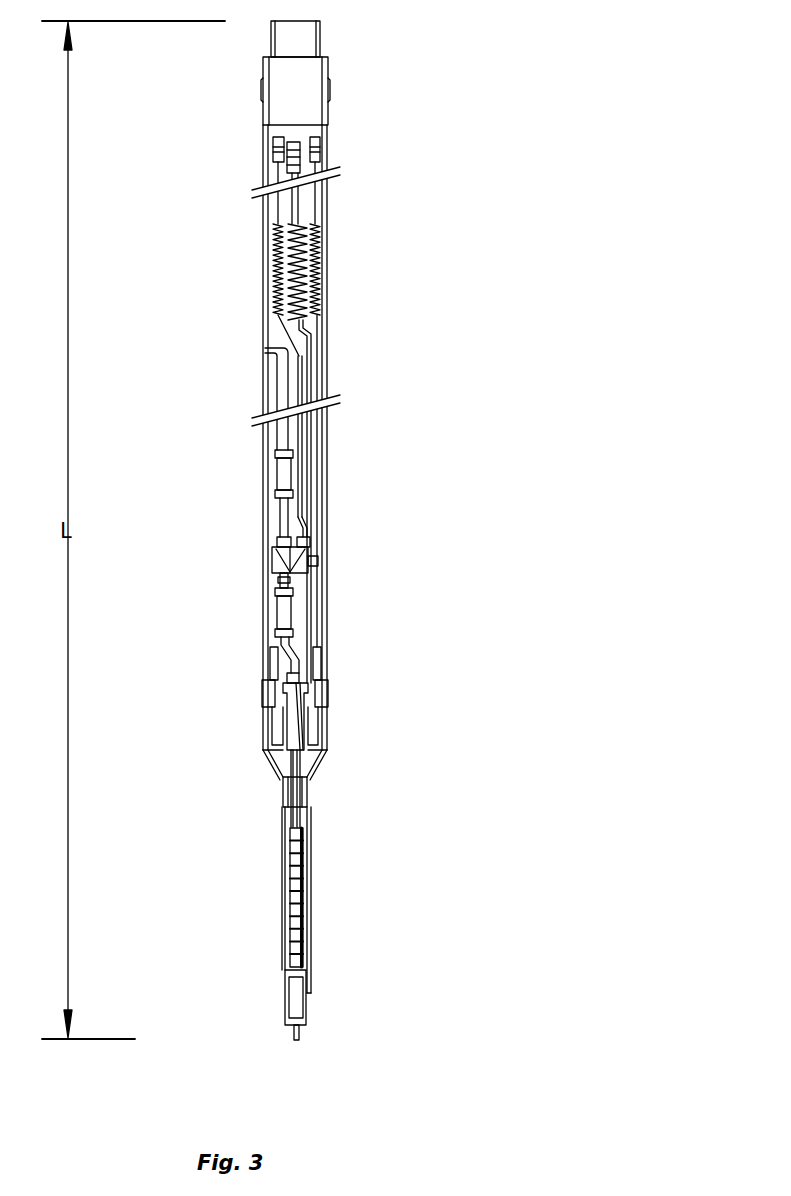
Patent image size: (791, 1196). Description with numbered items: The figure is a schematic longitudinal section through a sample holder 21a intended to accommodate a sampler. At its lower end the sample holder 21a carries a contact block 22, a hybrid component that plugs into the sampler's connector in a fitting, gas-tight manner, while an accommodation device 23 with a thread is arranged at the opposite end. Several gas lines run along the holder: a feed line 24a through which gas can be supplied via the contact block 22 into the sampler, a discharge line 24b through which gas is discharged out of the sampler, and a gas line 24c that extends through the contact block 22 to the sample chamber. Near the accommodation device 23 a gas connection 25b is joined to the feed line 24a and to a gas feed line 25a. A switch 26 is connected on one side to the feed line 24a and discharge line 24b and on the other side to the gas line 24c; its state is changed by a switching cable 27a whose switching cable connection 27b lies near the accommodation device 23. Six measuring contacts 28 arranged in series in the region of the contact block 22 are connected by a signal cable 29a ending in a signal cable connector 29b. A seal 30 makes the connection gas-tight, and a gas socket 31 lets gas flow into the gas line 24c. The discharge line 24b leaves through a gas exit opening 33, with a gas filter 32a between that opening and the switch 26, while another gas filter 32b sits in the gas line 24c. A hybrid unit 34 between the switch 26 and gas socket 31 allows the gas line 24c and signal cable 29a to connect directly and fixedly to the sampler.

The sample holder 21a is at (384, 241).
The contact block 22 is at (283, 947).
The accommodation device 23 is at (328, 90).
The feed line 24a is at (310, 374).
The discharge line 24b is at (283, 392).
The gas line 24c is at (283, 657).
The gas feed line 25a is at (293, 203).
The gas connection 25b is at (293, 168).
The switch 26 is at (283, 562).
The switching cable 27a is at (317, 322).
The switching cable connection 27b is at (320, 152).
The measuring contacts 28 is at (292, 872).
The signal cable 29a is at (277, 250).
The signal cable connector 29b is at (278, 148).
The seal 30 is at (283, 985).
The gas socket 31 is at (292, 1038).
The gas filter 32a is at (285, 475).
The gas filter 32b is at (283, 613).
The gas exit opening 33 is at (268, 349).
The hybrid unit 34 is at (293, 715).